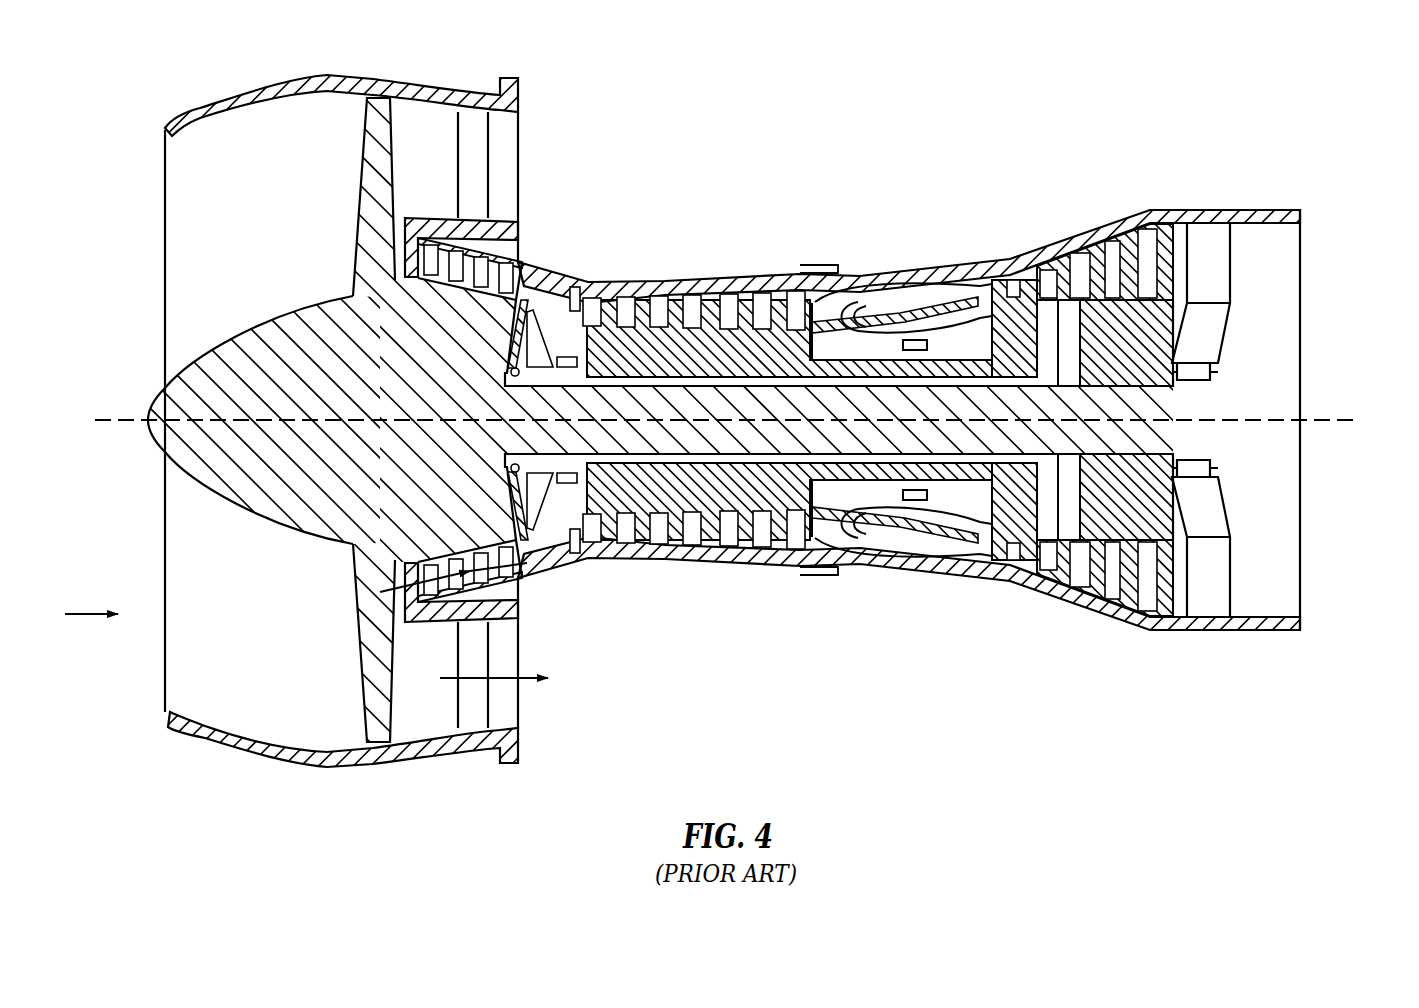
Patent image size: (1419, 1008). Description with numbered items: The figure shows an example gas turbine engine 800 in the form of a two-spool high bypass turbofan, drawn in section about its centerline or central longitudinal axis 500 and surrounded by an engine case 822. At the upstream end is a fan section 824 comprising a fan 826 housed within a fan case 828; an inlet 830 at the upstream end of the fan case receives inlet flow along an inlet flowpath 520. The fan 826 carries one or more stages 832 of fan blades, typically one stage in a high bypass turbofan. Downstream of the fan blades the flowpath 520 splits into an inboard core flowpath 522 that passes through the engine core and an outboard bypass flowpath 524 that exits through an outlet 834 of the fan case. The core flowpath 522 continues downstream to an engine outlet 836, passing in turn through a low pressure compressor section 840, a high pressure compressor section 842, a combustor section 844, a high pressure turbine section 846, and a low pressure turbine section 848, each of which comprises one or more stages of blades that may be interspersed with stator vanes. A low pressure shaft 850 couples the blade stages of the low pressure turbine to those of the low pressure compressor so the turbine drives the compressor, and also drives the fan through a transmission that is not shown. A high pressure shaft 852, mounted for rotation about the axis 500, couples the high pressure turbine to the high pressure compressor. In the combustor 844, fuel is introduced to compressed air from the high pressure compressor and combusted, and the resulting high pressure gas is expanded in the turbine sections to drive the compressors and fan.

The central longitudinal axis 500 is at (104, 400).
The inlet flowpath 520 is at (92, 614).
The core flowpath 522 is at (518, 593).
The bypass flowpath 524 is at (500, 680).
The gas turbine engine 800 is at (709, 504).
The engine case 822 is at (765, 576).
The fan section 824 is at (330, 794).
The fan 826 is at (338, 652).
The fan case 828 is at (395, 766).
The inlet 830 is at (140, 685).
The stages of fan blades 832 is at (372, 607).
The outlet of the fan case 834 is at (532, 177).
The engine outlet 836 is at (1314, 572).
The low pressure compressor section 840 is at (492, 261).
The high pressure compressor section 842 is at (694, 310).
The combustor section 844 is at (915, 303).
The high pressure turbine section 846 is at (998, 304).
The low pressure turbine section 848 is at (1139, 260).
The low pressure shaft 850 is at (915, 440).
The high pressure shaft 852 is at (965, 478).